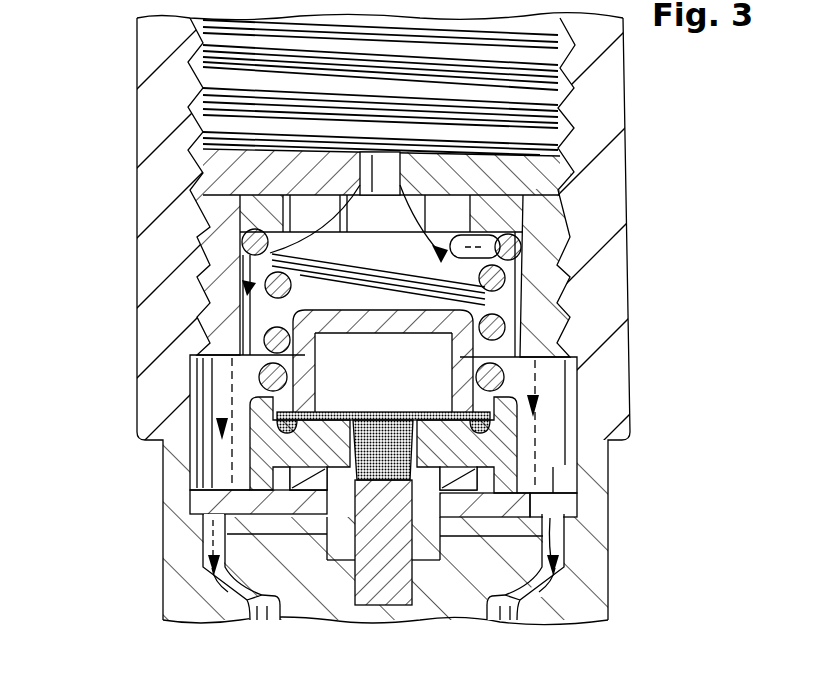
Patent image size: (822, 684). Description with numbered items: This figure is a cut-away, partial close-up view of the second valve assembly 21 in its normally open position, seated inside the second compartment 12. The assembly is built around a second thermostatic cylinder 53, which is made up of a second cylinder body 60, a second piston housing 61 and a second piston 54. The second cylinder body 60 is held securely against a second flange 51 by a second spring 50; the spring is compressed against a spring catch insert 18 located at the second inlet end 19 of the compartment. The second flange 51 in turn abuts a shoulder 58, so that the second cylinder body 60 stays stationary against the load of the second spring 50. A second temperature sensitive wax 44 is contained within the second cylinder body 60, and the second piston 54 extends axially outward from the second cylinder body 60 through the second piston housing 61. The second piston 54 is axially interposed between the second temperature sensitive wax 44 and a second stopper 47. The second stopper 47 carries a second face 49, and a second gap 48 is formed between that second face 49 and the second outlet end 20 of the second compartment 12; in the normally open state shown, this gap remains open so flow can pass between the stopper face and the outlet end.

The second compartment 12 is at (557, 420).
The spring catch insert 18 is at (215, 215).
The second inlet end 19 is at (568, 232).
The second outlet end 20 is at (213, 580).
The second valve assembly 21 is at (75, 207).
The second temperature sensitive wax 44 is at (440, 378).
The second stopper 47 is at (535, 547).
The second gap 48 is at (205, 600).
The second face 49 is at (560, 607).
The second spring 50 is at (520, 372).
The second flange 51 is at (240, 485).
The second thermostatic cylinder 53 is at (212, 413).
The second piston 54 is at (420, 622).
The shoulder 58 is at (535, 527).
The second cylinder body 60 is at (245, 304).
The second piston housing 61 is at (235, 528).